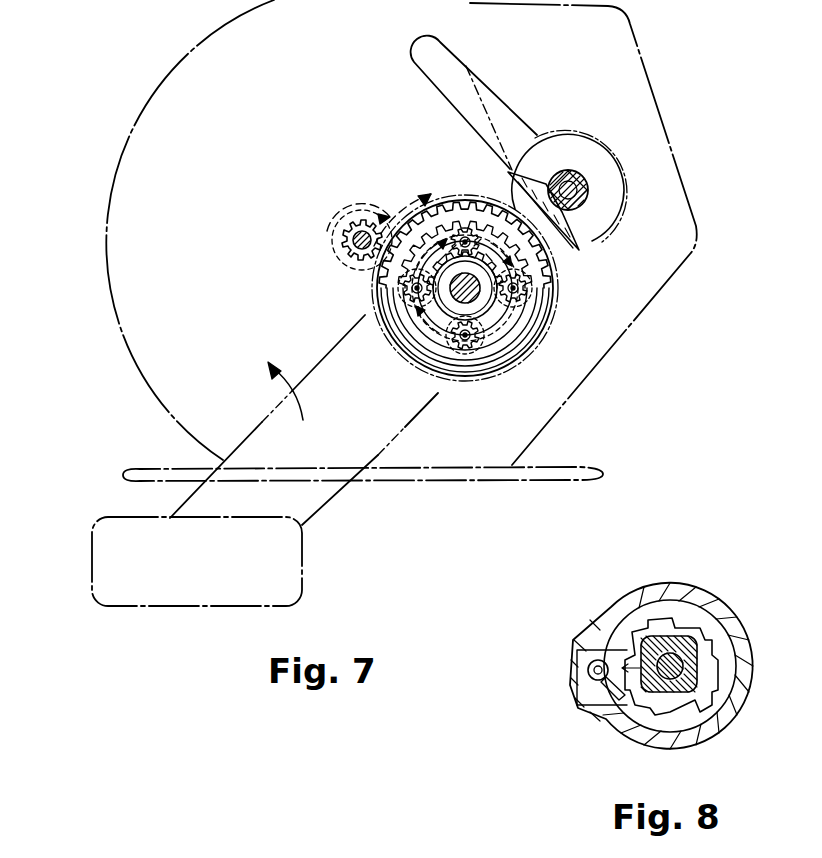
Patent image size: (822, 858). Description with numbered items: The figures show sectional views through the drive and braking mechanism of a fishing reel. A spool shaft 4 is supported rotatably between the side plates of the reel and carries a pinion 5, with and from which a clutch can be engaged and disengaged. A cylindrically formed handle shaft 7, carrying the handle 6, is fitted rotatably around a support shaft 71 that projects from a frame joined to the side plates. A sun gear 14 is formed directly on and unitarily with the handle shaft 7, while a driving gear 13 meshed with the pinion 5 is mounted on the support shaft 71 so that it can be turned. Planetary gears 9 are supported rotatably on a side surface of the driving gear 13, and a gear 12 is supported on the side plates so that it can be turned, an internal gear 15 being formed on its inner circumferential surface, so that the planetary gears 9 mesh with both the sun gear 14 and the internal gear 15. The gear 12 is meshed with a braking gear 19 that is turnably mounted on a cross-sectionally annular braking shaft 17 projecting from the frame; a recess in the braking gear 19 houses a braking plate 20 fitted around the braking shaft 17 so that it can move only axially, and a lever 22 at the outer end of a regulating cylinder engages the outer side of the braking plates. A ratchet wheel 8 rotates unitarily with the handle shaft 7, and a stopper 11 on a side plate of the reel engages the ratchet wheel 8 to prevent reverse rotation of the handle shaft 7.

In FIG. 7, the spool shaft 4 is at (352, 243).
In FIG. 7, the pinion 5 is at (363, 268).
In FIG. 7, the handle 6 is at (318, 510).
In FIG. 8, the handle shaft 7 is at (693, 660).
In FIG. 8, the ratchet wheel 8 is at (697, 635).
In FIG. 7, the planetary gears 9 is at (467, 226).
In FIG. 8, the stopper 11 is at (626, 696).
In FIG. 7, the gear 12 is at (457, 214).
In FIG. 7, the driving gear 13 is at (396, 222).
In FIG. 7, the sun gear 14 is at (488, 298).
In FIG. 7, the internal gear 15 is at (487, 224).
In FIG. 7, the braking shaft 17 is at (590, 191).
In FIG. 7, the braking gear 19 is at (489, 288).
In FIG. 7, the braking plate 20 is at (582, 204).
In FIG. 7, the lever 22 is at (483, 88).
In FIG. 7, the support shaft 71 is at (480, 310).
In FIG. 8, the support shaft 71 is at (680, 672).